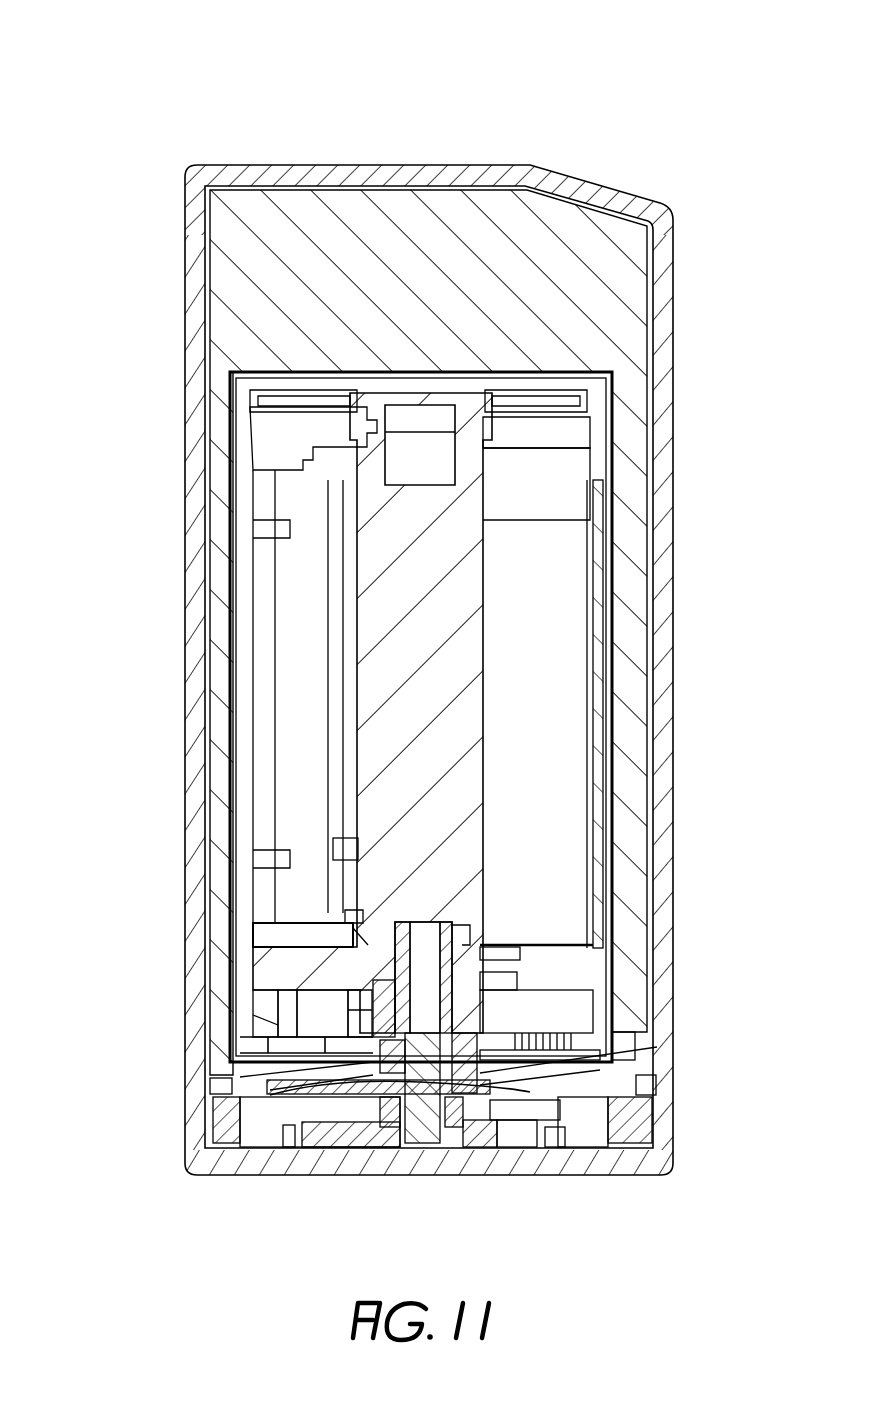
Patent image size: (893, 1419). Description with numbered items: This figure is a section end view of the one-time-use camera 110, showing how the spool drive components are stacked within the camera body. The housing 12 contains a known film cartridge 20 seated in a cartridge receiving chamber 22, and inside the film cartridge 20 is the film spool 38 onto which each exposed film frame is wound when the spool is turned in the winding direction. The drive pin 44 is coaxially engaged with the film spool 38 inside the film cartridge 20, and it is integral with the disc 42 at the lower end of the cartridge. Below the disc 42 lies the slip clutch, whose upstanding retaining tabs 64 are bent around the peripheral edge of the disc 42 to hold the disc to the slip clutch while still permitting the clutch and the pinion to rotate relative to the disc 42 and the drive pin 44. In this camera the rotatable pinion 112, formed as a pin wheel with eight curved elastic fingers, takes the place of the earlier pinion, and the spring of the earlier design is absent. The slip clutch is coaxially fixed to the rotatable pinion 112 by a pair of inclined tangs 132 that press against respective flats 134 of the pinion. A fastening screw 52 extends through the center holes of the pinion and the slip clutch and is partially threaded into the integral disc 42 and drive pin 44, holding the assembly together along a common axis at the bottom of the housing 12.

The one-time-use camera 110 is at (150, 140).
The housing 12 is at (188, 166).
The film cartridge 20 is at (598, 383).
The cartridge receiving chamber 22 is at (586, 473).
The film spool 38 is at (470, 580).
The drive pin 44 is at (452, 936).
The retaining tabs 64 is at (530, 1092).
The rotatable pinion 112 is at (330, 1146).
The fastening screw 52 is at (402, 1147).
The flats 134 is at (488, 1148).
The inclined tangs 132 is at (510, 1148).
The disc 42 is at (548, 1100).